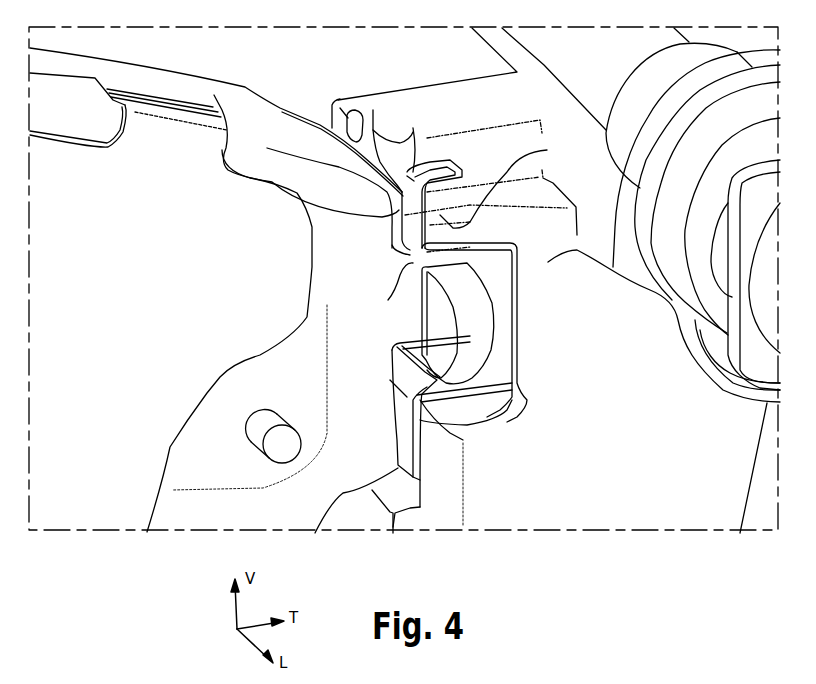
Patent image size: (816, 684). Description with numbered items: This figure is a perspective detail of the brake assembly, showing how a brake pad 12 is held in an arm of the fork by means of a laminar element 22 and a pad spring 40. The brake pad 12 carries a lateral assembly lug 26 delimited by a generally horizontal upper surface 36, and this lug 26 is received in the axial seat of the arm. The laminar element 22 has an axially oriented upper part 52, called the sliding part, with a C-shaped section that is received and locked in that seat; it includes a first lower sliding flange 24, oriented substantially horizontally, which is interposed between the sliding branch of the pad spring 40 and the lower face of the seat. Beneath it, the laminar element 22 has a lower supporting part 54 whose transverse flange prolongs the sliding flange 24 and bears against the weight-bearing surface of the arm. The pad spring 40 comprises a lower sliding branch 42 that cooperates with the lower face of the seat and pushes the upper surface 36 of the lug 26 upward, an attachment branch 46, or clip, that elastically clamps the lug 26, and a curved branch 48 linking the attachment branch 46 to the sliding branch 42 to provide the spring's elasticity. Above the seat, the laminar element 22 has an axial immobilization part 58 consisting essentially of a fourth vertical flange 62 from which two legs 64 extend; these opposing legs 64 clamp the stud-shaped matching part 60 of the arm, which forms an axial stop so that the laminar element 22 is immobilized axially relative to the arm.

The brake pad 12 is at (246, 290).
The laminar element 22 is at (548, 150).
The first lower sliding flange 24 is at (505, 407).
The lateral assembly lug 26 is at (413, 263).
The upper surface 36 is at (397, 247).
The pad spring 40 is at (478, 350).
The lower sliding branch 42 is at (430, 410).
The attachment branch 46 is at (437, 313).
The curved branch 48 is at (472, 310).
The upper part 52 is at (502, 286).
The lower supporting part 54 is at (402, 442).
The axial immobilization part 58 is at (373, 142).
The matching part 60 is at (398, 152).
The fourth vertical flange 62 is at (397, 207).
The legs 64 is at (356, 98).